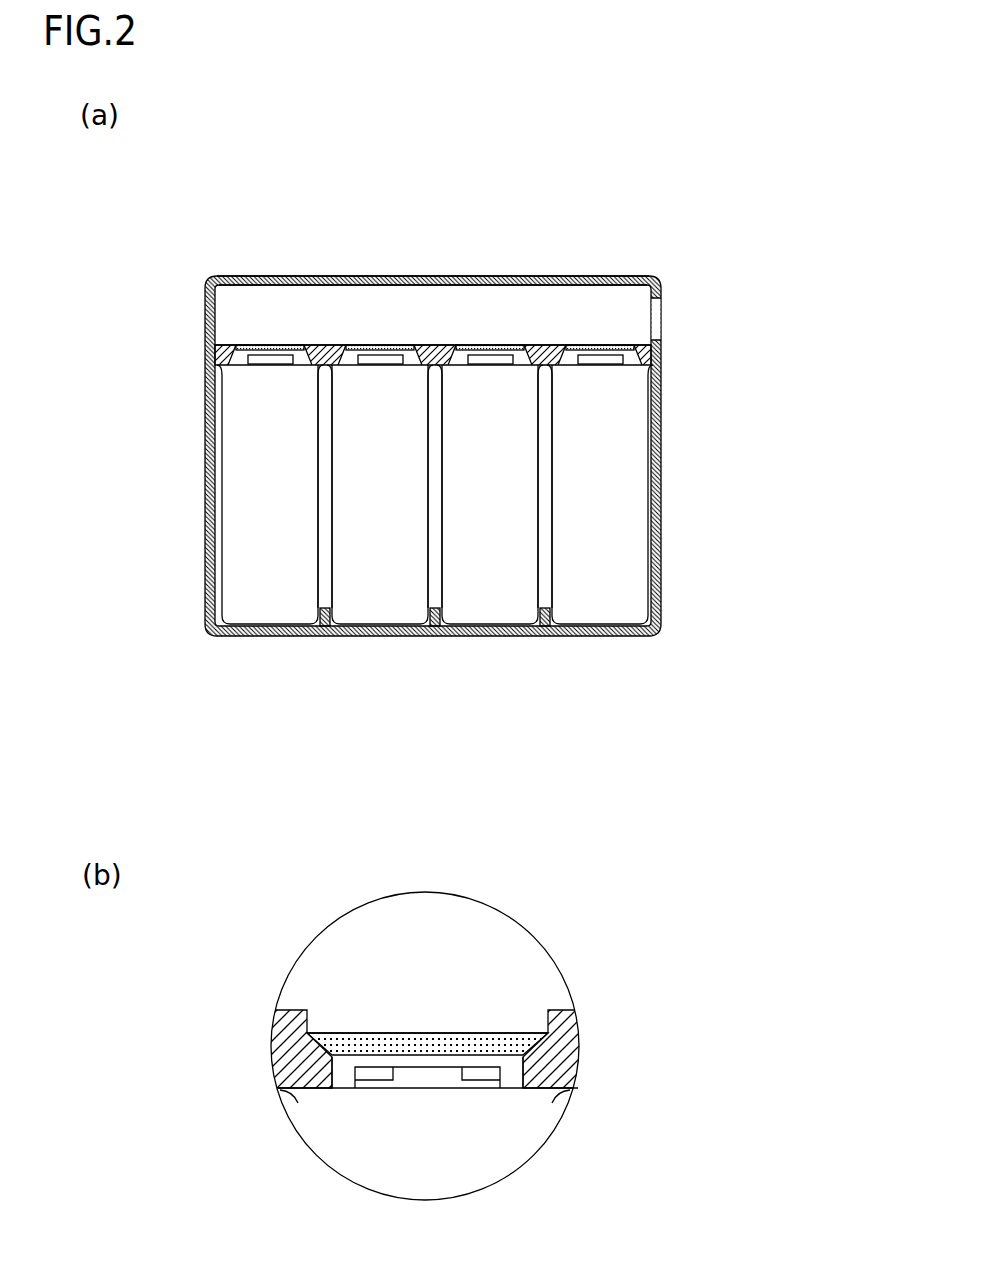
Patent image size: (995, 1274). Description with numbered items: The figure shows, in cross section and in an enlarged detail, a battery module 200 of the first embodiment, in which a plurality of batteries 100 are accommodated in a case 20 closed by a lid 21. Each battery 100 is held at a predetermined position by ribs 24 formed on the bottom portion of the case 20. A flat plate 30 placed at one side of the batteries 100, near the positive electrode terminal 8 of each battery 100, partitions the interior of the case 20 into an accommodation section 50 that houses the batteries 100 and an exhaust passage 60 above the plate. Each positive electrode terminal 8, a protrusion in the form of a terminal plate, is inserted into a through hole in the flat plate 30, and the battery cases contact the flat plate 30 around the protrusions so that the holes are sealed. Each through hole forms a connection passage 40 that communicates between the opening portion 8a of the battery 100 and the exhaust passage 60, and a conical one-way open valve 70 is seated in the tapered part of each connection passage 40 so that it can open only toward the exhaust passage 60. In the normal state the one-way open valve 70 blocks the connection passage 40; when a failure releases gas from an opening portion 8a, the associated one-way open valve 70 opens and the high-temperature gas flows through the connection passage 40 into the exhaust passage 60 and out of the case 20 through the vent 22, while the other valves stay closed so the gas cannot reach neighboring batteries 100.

The battery module 200 is at (477, 628).
The case 20 is at (661, 477).
The lid 21 is at (480, 276).
The vent 22 is at (660, 310).
The ribs 24 is at (335, 637).
The flat plate 30 is at (338, 365).
The connection passage 40 is at (343, 1072).
The accommodation section 50 is at (543, 448).
The exhaust passage 60 is at (327, 312).
The one-way open valve 70 is at (268, 347).
The battery 100 is at (249, 504).
The positive electrode terminal 8 is at (430, 1090).
The opening portion 8a is at (372, 1090).